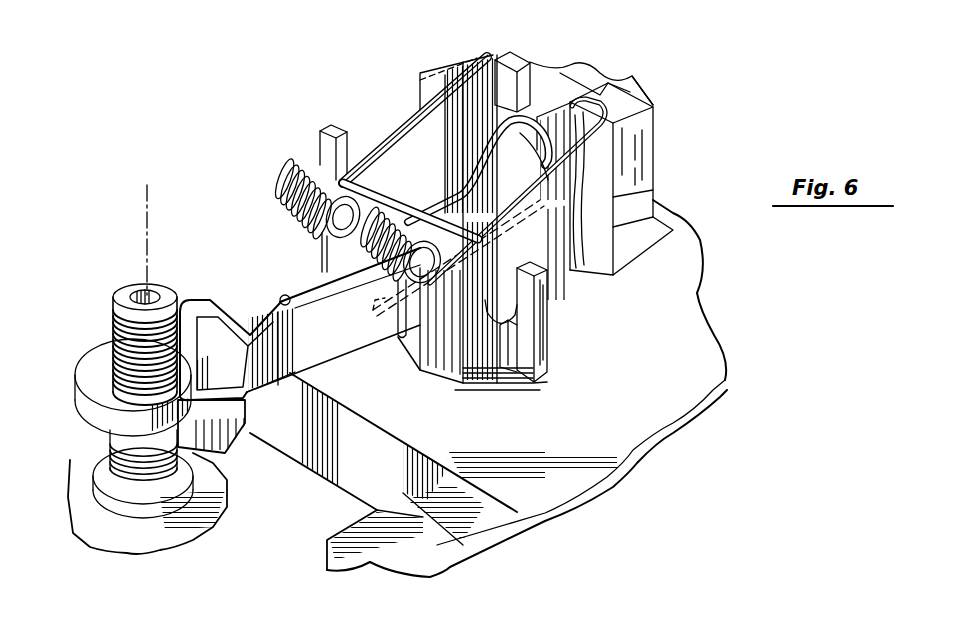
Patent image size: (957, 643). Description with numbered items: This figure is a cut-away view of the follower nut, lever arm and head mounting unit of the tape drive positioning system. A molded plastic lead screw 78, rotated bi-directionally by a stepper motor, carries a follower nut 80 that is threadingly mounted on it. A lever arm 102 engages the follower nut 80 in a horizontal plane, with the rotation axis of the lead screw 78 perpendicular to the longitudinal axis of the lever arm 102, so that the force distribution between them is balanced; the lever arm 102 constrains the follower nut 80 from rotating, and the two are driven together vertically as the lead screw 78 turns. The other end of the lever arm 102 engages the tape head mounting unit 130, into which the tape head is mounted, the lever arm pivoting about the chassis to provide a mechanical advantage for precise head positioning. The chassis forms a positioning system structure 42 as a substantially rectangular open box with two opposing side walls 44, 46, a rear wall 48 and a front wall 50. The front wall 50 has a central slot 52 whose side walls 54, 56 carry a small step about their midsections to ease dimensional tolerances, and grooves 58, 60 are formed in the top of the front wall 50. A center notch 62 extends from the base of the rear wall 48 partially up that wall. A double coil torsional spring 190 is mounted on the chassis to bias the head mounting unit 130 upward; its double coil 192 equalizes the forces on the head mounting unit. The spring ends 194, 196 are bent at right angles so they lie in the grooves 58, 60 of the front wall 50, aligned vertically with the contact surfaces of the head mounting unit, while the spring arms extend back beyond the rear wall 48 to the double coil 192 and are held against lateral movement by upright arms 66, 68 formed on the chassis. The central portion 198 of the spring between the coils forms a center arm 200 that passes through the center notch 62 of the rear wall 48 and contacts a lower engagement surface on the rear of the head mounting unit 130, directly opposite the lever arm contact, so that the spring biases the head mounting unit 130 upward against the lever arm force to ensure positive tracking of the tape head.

The positioning system structure 42 is at (588, 297).
The side wall 44 is at (420, 119).
The side wall 46 is at (578, 310).
The rear wall 48 is at (437, 352).
The front wall 50 is at (548, 78).
The slot 52 is at (600, 78).
The slot side wall 54 is at (567, 88).
The slot side wall 56 is at (645, 83).
The groove 58 is at (524, 56).
The groove 60 is at (655, 100).
The center notch 62 is at (392, 340).
The upright arm 66 is at (326, 122).
The upright arm 68 is at (547, 350).
The lead screw 78 is at (127, 297).
The follower nut 80 is at (87, 360).
The lever arm 102 is at (305, 282).
The tape head mounting unit 130 is at (660, 128).
The double coil torsional spring 190 is at (468, 178).
The double coil 192 is at (293, 196).
The spring end 194 is at (497, 58).
The spring end 196 is at (608, 165).
The central portion 198 is at (330, 252).
The center arm 200 is at (612, 272).